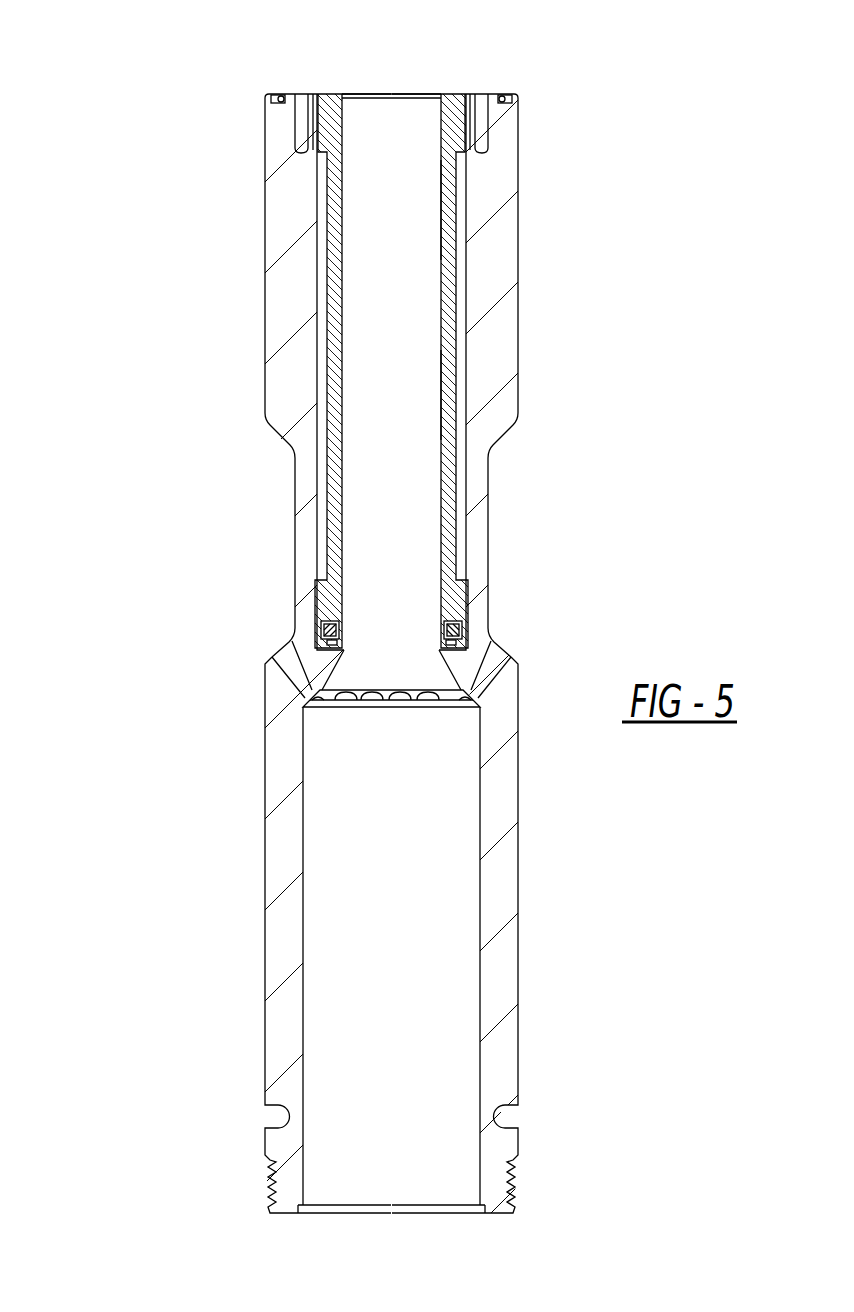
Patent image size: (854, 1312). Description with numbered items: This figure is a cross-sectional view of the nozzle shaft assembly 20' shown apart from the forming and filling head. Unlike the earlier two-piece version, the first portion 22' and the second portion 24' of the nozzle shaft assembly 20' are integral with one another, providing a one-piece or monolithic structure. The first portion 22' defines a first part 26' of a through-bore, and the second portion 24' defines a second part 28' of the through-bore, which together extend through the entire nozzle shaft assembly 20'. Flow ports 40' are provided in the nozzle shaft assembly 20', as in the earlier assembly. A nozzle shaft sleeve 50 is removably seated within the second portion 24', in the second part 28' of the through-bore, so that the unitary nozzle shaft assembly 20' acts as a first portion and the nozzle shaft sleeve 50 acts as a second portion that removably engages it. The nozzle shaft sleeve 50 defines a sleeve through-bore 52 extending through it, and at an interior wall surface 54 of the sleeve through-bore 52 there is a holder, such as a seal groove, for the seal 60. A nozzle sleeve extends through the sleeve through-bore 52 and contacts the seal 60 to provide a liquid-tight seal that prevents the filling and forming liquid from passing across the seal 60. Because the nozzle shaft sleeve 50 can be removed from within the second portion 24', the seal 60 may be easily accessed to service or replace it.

The nozzle shaft assembly 20' is at (427, 656).
The first portion 22' is at (427, 656).
The second portion 24' is at (427, 627).
The first part of the through-bore 26' is at (463, 956).
The second part of the through-bore 28' is at (427, 590).
The flow ports 40' is at (410, 647).
The nozzle shaft sleeve 50 is at (343, 131).
The sleeve through-bore 52 is at (446, 374).
The interior wall surface 54 is at (444, 221).
The seal 60 is at (455, 625).